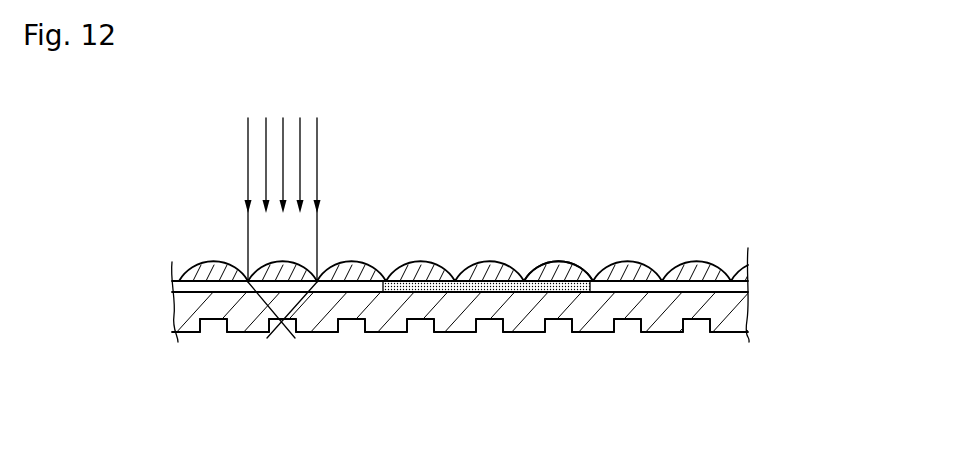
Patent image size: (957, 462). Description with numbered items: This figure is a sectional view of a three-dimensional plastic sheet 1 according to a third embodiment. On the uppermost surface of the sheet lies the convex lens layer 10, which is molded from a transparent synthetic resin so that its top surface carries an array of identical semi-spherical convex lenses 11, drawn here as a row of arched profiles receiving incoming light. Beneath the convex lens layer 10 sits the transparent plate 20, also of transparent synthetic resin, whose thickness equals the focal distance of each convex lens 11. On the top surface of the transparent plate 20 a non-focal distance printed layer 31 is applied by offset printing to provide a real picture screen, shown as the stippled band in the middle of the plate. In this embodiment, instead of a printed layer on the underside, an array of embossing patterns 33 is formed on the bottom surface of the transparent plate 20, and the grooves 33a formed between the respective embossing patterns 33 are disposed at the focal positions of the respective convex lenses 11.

The three-dimensional plastic sheet 1 is at (469, 287).
The convex lens layer 10 is at (451, 222).
The convex lens 11 is at (557, 264).
The non-focal distance printed layer 31 is at (518, 268).
The transparent plate 20 is at (438, 373).
The embossing pattern 33 is at (388, 332).
The groove 33a is at (353, 332).